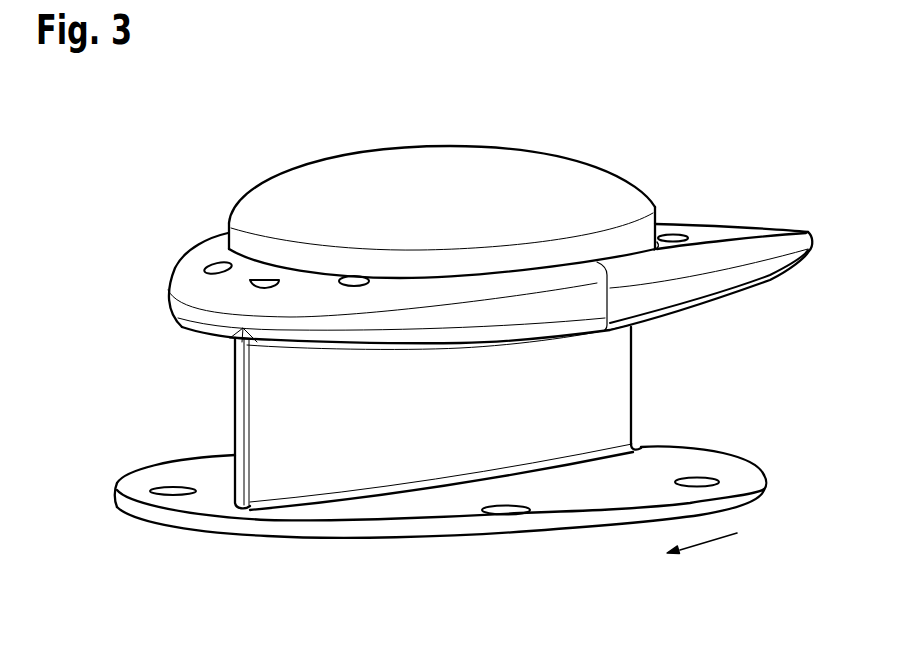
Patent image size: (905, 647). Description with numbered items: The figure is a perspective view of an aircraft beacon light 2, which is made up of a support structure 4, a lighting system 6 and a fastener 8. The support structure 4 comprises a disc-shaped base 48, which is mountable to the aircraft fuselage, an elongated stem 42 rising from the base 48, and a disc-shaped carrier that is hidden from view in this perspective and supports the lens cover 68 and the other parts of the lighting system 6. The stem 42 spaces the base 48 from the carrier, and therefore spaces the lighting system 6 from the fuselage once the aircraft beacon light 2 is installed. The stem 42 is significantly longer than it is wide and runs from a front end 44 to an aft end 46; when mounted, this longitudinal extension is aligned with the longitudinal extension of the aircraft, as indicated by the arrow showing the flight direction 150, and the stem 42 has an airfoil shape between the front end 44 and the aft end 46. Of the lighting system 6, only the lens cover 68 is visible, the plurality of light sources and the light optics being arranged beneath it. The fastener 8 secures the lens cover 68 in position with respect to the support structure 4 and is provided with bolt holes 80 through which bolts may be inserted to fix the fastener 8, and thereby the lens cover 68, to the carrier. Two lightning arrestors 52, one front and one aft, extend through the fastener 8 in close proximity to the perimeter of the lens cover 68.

The aircraft beacon light 2 is at (775, 126).
The support structure 4 is at (95, 355).
The lighting system 6 is at (262, 125).
The fastener 8 is at (168, 292).
The stem 42 is at (415, 425).
The front end 44 is at (233, 387).
The aft end 46 is at (633, 388).
The base 48 is at (408, 538).
The lightning arrestors 52 is at (677, 234).
The lens cover 68 is at (541, 150).
The bolt holes 80 is at (348, 277).
The flight direction 150 is at (713, 542).